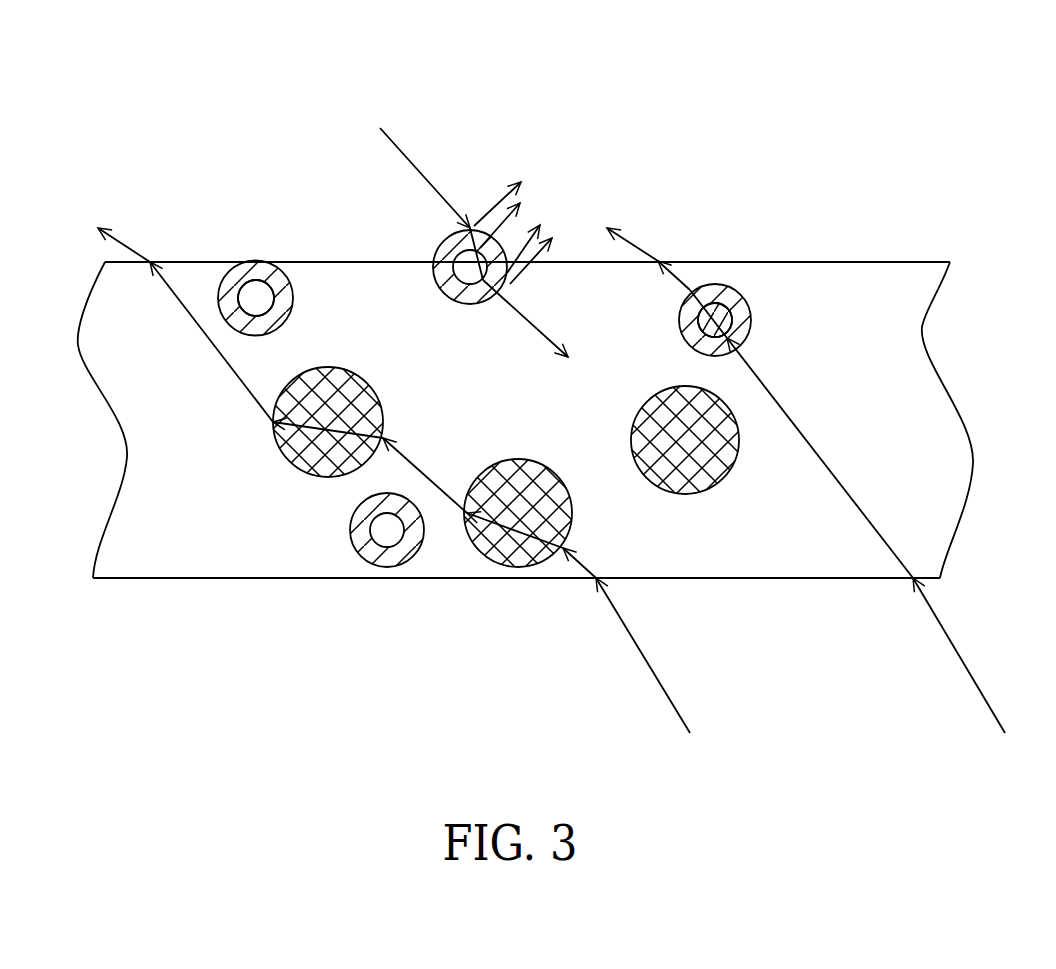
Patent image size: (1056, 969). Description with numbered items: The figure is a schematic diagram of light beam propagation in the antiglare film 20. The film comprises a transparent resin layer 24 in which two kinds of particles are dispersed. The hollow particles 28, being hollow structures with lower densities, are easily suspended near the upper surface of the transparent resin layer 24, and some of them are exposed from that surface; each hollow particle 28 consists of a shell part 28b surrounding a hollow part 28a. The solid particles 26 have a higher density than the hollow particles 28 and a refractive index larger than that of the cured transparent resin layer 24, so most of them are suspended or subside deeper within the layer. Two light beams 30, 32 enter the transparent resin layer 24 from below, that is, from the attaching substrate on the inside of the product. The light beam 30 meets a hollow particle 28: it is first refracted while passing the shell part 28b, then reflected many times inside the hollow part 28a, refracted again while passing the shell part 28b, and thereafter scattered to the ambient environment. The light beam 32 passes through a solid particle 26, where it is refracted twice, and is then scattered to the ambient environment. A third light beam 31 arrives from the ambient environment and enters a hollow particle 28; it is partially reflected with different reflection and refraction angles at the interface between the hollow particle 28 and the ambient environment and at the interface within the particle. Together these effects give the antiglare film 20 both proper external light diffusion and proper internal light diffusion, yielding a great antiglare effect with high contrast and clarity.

The antiglare film 20 is at (557, 415).
The transparent resin layer 24 is at (905, 330).
The solid particles 26 is at (300, 457).
The hollow particles 28 is at (267, 241).
The hollow part 28a is at (281, 260).
The shell part 28b is at (252, 273).
The light beam 30 is at (922, 605).
The light beam 31 is at (412, 160).
The light beam 32 is at (668, 700).